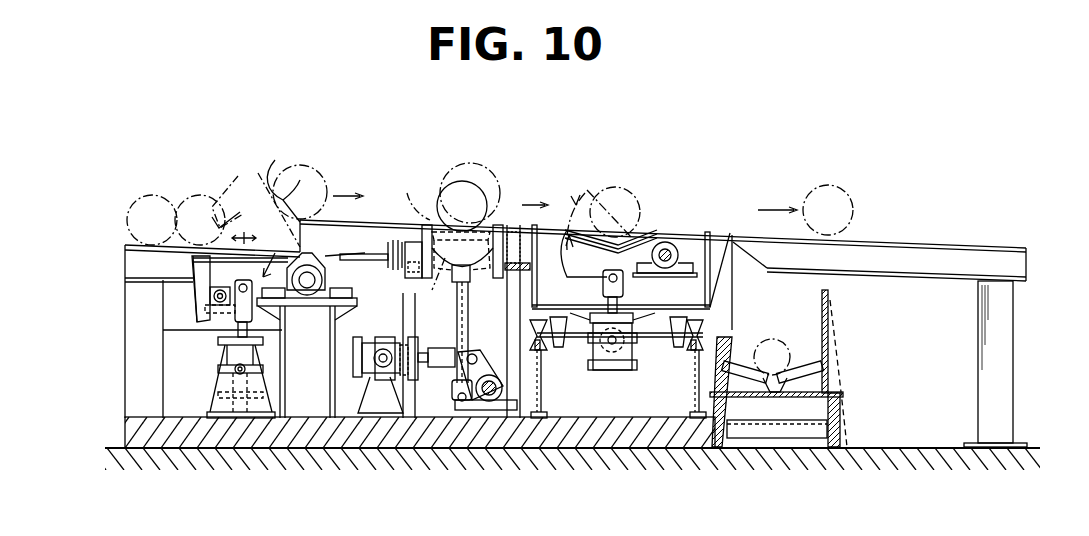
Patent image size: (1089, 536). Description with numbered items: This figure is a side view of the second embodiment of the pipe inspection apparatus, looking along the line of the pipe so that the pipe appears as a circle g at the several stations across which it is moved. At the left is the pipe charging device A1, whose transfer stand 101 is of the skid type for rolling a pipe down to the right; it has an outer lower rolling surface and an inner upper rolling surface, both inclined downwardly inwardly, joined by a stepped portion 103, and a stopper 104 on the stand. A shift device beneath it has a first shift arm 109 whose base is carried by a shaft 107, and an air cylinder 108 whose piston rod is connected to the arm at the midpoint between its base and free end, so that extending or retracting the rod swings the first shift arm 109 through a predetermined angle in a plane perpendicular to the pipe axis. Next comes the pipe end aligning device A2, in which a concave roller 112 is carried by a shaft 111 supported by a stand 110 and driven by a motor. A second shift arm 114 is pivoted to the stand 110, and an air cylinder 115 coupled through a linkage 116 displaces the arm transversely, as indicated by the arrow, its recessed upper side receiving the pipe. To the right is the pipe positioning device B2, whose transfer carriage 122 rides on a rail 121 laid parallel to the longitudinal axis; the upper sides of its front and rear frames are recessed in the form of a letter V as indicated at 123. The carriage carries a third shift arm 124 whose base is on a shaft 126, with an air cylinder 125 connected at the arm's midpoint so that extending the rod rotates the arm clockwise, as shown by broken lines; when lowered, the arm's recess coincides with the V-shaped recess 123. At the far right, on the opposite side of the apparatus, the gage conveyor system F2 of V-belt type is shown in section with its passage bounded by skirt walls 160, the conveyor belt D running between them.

The transfer stand 101 is at (360, 232).
The stepped portion 103 is at (275, 185).
The stopper 104 is at (256, 216).
The shaft 107 is at (312, 279).
The air cylinder 108 is at (232, 358).
The first shift arm 109 is at (198, 288).
The stand 110 is at (512, 318).
The shaft 111 is at (406, 260).
The concave roller 112 is at (480, 245).
The second shift arm 114 is at (442, 245).
The air cylinder 115 is at (374, 346).
The linkage 116 is at (456, 345).
The rail 121 is at (690, 346).
The transfer carriage 122 is at (570, 330).
The V-shaped recess 123 is at (623, 232).
The third shift arm 124 is at (632, 250).
The air cylinder 125 is at (615, 358).
The shaft 126 is at (667, 253).
The skirt wall 160 is at (733, 340).
The pipe charging device A1 is at (234, 159).
The pipe end aligning device A2 is at (479, 162).
The pipe positioning device B2 is at (684, 194).
The roll D is at (772, 342).
The gage conveyor system F2 is at (809, 449).
The glass roll g is at (846, 206).